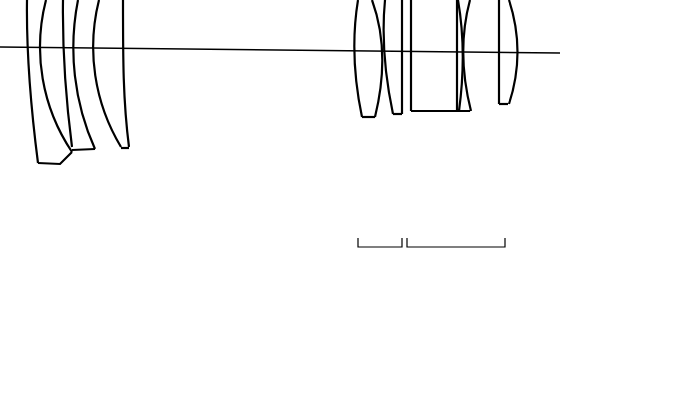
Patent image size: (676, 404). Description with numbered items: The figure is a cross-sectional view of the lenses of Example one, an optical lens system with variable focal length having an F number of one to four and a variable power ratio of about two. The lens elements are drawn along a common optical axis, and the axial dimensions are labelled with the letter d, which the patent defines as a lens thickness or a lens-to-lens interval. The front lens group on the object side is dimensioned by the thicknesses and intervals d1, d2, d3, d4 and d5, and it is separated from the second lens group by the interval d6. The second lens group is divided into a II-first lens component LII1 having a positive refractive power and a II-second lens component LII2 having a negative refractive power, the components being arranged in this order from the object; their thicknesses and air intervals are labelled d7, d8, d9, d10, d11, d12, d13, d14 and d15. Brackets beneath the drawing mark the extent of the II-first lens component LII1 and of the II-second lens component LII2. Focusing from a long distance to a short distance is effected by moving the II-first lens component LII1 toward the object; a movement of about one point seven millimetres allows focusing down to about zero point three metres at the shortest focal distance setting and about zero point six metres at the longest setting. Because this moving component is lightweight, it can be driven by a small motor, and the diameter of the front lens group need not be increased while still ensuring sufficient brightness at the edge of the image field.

The lens thickness or lens-to-lens interval d1 is at (32, 48).
The lens thickness or lens-to-lens interval d2 is at (50, 48).
The lens thickness or lens-to-lens interval d3 is at (68, 48).
The lens thickness or lens-to-lens interval d4 is at (85, 48).
The lens thickness or lens-to-lens interval d5 is at (110, 48).
The lens thickness or lens-to-lens interval d6 is at (262, 52).
The lens thickness or lens-to-lens interval d7 is at (362, 52).
The lens thickness or lens-to-lens interval d8 is at (383, 52).
The lens thickness or lens-to-lens interval d9 is at (396, 52).
The lens thickness or lens-to-lens interval d10 is at (407, 52).
The lens thickness or lens-to-lens interval d11 is at (433, 52).
The lens thickness or lens-to-lens interval d12 is at (440, 52).
The lens thickness or lens-to-lens interval d13 is at (466, 56).
The lens thickness or lens-to-lens interval d14 is at (482, 52).
The lens thickness or lens-to-lens interval d15 is at (512, 53).
The II-first lens component LII1 is at (380, 258).
The II-second lens component LII2 is at (456, 258).